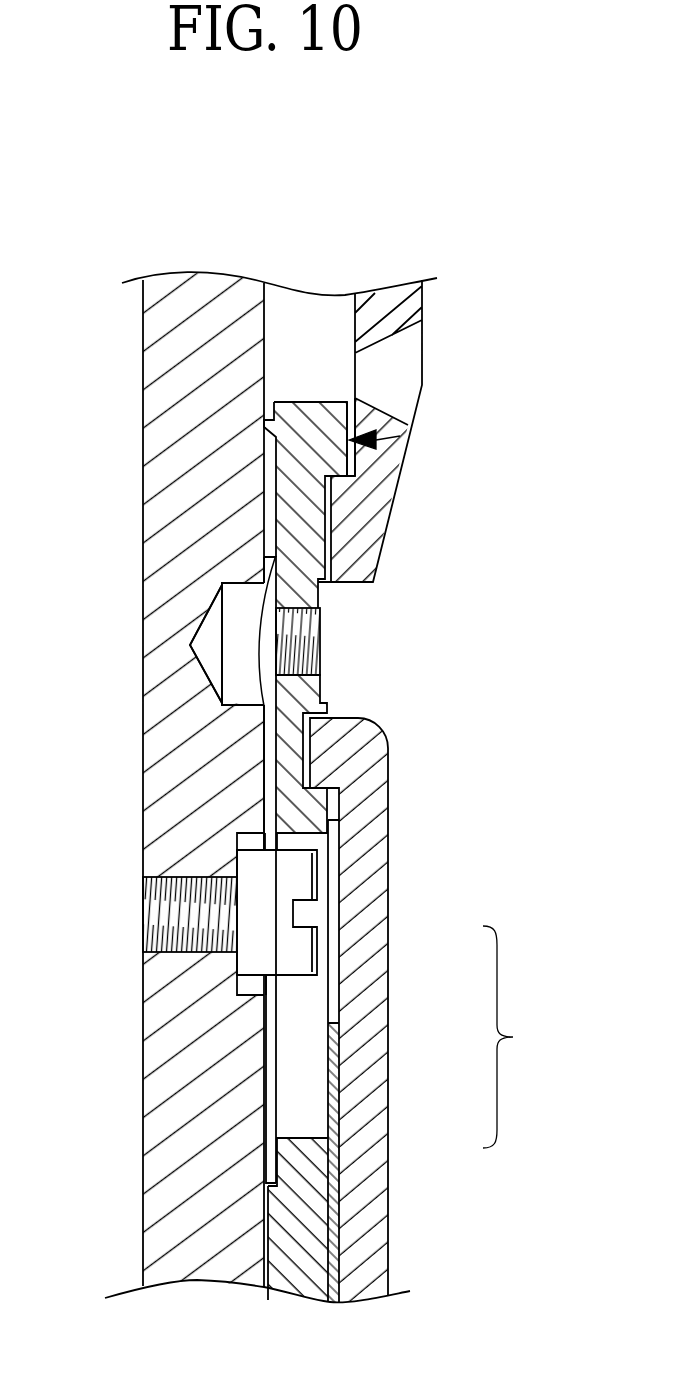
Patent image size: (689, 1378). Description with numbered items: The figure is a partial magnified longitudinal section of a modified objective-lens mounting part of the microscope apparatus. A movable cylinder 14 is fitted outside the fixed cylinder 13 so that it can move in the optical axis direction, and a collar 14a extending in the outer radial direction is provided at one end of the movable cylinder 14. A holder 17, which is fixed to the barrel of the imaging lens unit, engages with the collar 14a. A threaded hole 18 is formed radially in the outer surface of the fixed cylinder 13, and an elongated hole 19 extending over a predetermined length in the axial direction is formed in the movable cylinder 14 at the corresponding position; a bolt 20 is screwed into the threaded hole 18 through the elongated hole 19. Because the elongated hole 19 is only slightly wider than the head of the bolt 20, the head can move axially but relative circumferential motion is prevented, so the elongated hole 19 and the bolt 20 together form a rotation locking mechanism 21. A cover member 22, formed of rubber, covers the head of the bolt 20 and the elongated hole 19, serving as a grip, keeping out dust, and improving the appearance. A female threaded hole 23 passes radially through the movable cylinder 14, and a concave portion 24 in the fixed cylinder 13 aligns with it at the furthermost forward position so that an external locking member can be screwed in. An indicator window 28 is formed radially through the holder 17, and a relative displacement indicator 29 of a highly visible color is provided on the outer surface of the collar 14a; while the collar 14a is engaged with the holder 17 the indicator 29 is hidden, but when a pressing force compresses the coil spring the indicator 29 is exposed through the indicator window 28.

The fixed cylinder 13 is at (162, 1135).
The movable cylinder 14 is at (312, 1168).
The collar 14a is at (337, 462).
The holder 17 is at (348, 520).
The threaded hole 18 is at (145, 947).
The elongated hole 19 is at (310, 1138).
The bolt 20 is at (300, 956).
The rotation locking mechanism 21 is at (520, 1037).
The cover member 22 is at (388, 818).
The female threaded hole 23 is at (310, 657).
The concave portion 24 is at (240, 703).
The indicator window 28 is at (381, 407).
The relative displacement indicator 29 is at (400, 436).